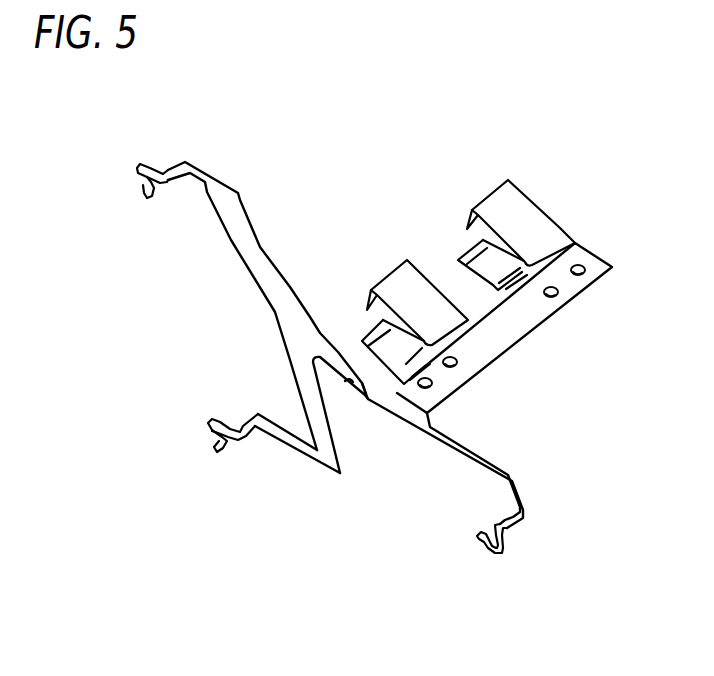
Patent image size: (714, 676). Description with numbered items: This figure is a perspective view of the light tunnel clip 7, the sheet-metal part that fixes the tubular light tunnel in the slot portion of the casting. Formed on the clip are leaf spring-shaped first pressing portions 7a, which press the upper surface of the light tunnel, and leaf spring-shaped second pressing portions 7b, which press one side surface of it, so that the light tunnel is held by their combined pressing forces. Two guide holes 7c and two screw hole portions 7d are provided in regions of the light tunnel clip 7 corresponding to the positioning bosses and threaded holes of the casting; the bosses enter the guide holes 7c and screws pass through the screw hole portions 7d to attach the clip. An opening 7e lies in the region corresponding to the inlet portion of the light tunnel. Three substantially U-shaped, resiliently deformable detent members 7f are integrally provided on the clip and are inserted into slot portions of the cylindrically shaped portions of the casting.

The light tunnel clip 7 is at (248, 148).
The first pressing portions 7a is at (462, 258).
The second pressing portions 7b is at (500, 207).
The guide holes 7c is at (557, 297).
The screw hole portions 7d is at (585, 274).
The opening 7e is at (367, 399).
The detent members 7f is at (141, 166).